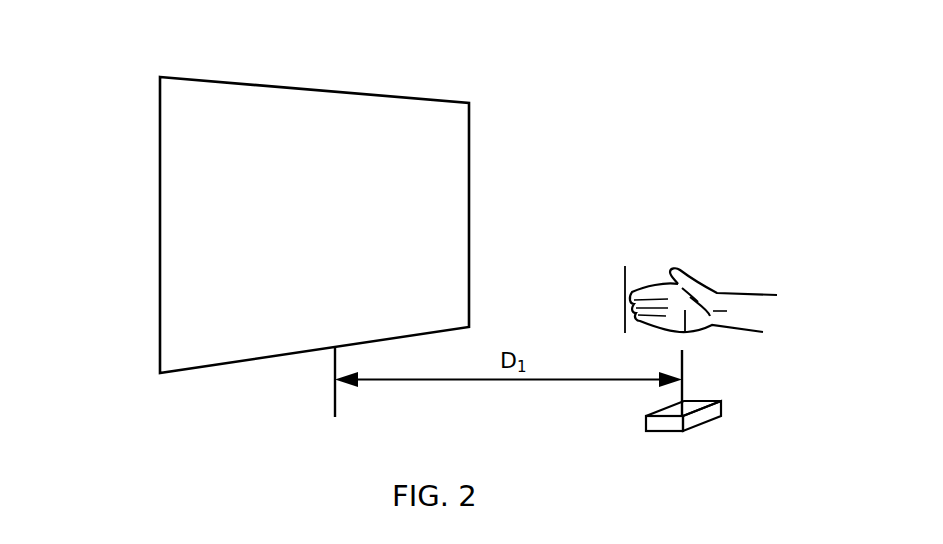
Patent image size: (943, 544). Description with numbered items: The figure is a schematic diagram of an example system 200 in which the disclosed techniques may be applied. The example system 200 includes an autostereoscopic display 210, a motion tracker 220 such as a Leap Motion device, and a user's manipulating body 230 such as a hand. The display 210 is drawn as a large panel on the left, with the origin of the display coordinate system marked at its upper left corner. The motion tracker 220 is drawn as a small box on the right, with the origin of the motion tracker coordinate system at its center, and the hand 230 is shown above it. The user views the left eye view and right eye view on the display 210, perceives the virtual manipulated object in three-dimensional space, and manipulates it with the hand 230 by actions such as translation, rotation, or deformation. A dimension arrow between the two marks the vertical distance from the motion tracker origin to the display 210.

The example system 200 is at (622, 44).
The autostereoscopic display 210 is at (160, 190).
The motion tracker 220 is at (646, 417).
The manipulating body 230 is at (707, 272).